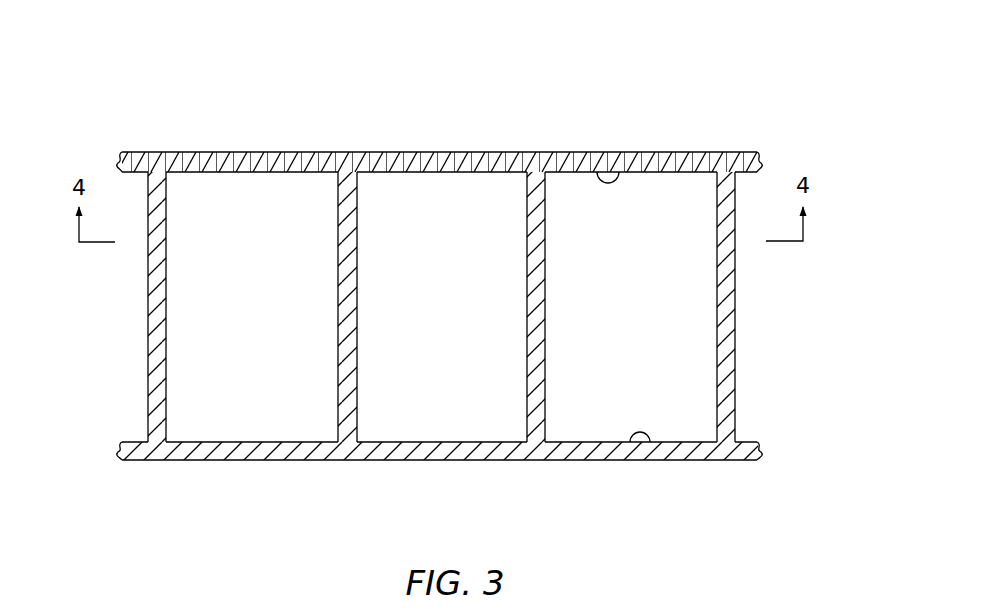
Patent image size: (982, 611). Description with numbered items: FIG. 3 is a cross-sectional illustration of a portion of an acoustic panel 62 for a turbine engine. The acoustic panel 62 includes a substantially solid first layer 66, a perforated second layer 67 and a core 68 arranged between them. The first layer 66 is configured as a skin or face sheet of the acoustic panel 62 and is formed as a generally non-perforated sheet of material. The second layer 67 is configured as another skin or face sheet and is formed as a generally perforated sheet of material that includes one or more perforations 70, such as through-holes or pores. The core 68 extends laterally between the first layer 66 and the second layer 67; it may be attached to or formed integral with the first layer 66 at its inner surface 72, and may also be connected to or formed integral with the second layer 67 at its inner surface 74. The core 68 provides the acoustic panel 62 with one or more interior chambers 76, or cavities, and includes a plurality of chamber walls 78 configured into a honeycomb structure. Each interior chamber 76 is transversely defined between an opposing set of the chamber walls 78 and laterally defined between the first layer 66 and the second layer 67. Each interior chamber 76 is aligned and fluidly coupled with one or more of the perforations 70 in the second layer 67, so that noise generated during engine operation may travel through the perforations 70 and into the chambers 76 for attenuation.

The acoustic panel 62 is at (477, 293).
The first layer 66 is at (688, 464).
The second layer 67 is at (648, 150).
The core 68 is at (747, 333).
The perforations 70 is at (446, 152).
The inner surface 72 is at (632, 443).
The inner surface 74 is at (600, 172).
The interior chambers 76 is at (268, 317).
The chamber walls 78 is at (167, 394).